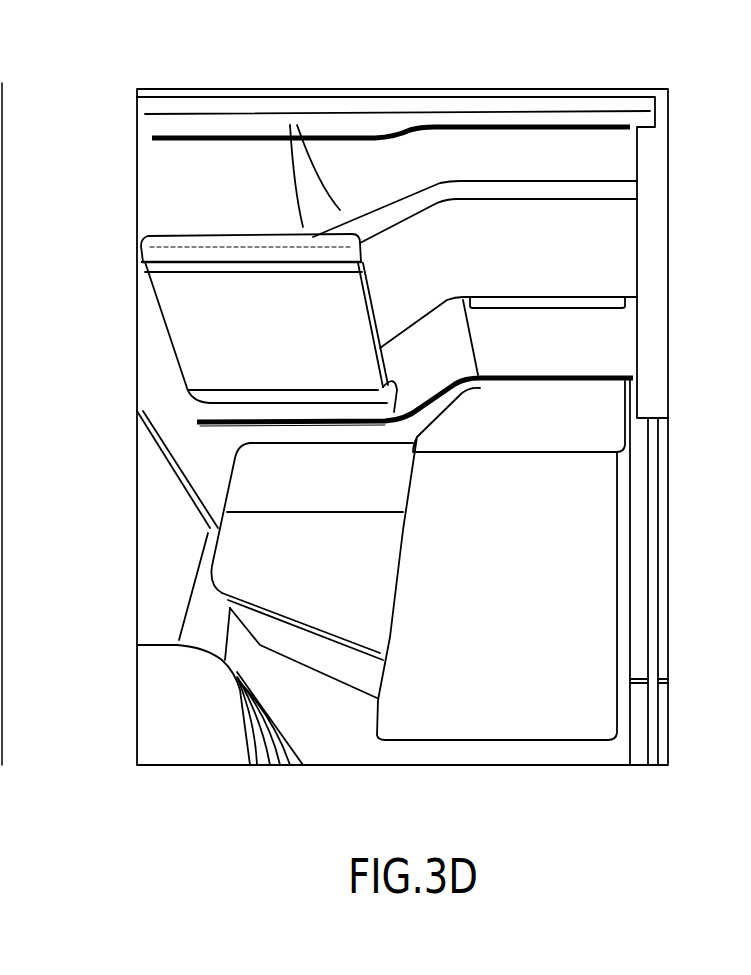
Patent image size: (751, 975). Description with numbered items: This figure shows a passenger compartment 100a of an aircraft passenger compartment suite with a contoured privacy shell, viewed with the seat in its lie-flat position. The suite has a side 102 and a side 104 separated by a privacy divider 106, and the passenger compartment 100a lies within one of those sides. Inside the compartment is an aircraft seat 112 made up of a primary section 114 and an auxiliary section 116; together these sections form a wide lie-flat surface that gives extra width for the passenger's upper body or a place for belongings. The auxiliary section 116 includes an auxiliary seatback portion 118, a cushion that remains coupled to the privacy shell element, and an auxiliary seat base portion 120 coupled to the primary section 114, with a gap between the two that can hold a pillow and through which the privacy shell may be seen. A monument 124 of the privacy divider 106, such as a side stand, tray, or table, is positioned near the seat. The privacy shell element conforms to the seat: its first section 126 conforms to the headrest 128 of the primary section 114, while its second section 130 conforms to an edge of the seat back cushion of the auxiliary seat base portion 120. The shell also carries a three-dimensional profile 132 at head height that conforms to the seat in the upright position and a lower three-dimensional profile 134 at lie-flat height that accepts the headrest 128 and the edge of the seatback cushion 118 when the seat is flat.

The passenger compartment 100a is at (128, 58).
The side 102 is at (13, 603).
The side 104 is at (120, 603).
The privacy divider 106 is at (13, 715).
The aircraft seat 112 is at (360, 708).
The primary section 114 is at (528, 604).
The auxiliary section 116 is at (318, 572).
The auxiliary seatback portion 118 is at (180, 288).
The auxiliary seat base portion 120 is at (262, 460).
The monument 124 is at (207, 721).
The first section 126 is at (543, 222).
The headrest 128 is at (603, 403).
The second section 130 is at (230, 438).
The three-dimensional profile 132 is at (228, 133).
The three-dimensional profile 134 is at (197, 427).